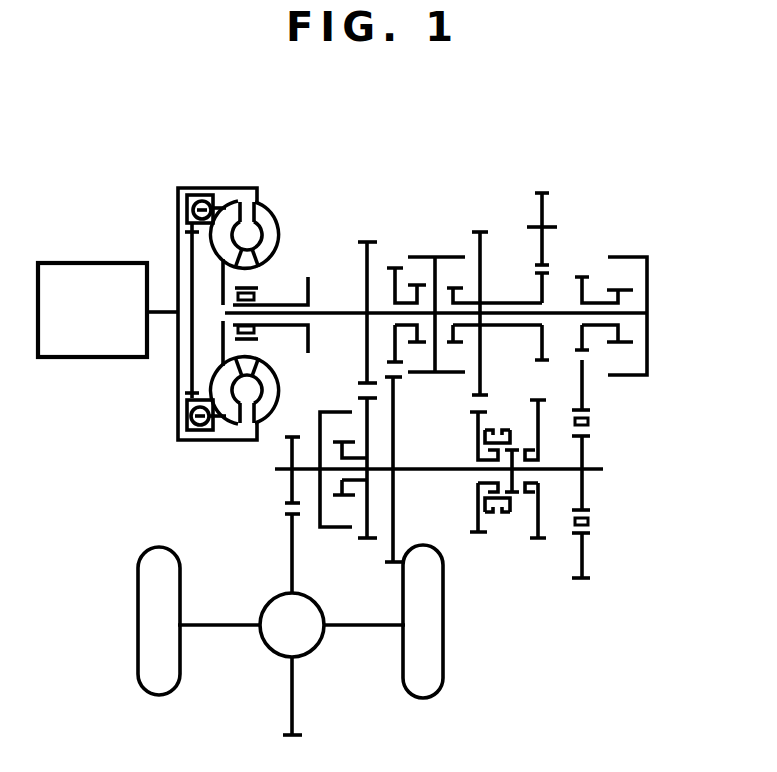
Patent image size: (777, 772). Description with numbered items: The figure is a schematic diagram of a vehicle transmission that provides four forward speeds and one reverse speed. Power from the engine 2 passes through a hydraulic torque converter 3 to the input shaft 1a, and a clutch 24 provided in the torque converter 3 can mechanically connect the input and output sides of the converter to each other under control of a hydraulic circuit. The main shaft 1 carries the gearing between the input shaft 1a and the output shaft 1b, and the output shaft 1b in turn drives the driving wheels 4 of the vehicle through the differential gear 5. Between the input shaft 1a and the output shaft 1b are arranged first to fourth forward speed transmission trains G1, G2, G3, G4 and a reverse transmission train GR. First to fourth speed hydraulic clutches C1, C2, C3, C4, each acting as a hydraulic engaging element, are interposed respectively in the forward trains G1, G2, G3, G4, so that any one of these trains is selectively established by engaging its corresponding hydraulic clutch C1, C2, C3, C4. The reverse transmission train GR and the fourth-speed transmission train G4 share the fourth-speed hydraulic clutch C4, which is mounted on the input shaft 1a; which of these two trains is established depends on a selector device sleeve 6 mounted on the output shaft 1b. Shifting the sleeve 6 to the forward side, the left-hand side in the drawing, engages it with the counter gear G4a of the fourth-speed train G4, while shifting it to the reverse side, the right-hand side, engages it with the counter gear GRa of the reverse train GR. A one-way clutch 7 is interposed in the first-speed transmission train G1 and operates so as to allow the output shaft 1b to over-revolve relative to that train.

The main shaft 1 is at (472, 208).
The input shaft 1a is at (323, 300).
The output shaft 1b is at (428, 472).
The engine 2 is at (97, 274).
The hydraulic torque converter 3 is at (280, 212).
The clutch 24 is at (177, 206).
The driving wheels 4 is at (158, 690).
The differential gear 5 is at (305, 645).
The selector device sleeve 6 is at (500, 512).
The one-way clutch 7 is at (590, 420).
The first-speed transmission train G1 is at (587, 266).
The second-speed transmission train G2 is at (395, 258).
The third-speed transmission train G3 is at (369, 234).
The fourth-speed transmission train G4 is at (492, 218).
The counter gear G4a is at (482, 520).
The reverse transmission train GR is at (548, 186).
The counter gear GRa is at (545, 534).
The first-speed hydraulic clutch C1 is at (634, 256).
The second-speed hydraulic clutch C2 is at (423, 375).
The third-speed hydraulic clutch C3 is at (333, 411).
The fourth-speed hydraulic clutch C4 is at (442, 255).